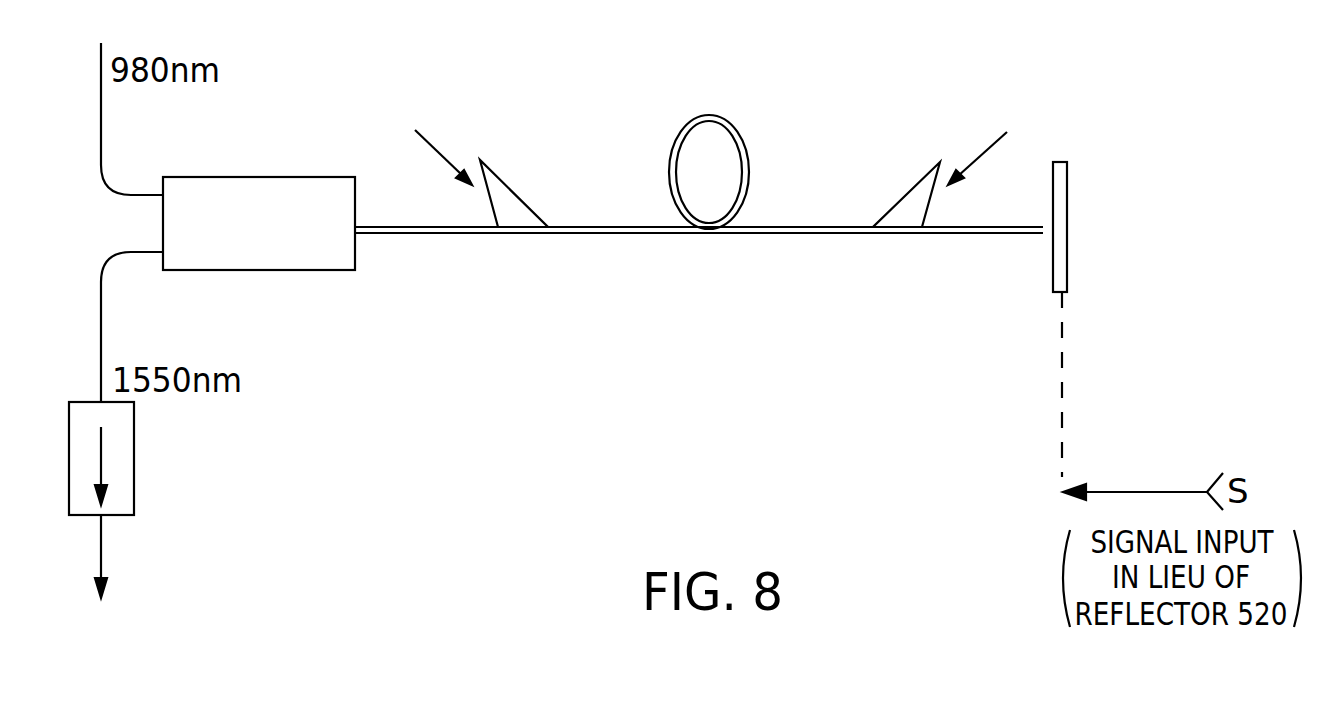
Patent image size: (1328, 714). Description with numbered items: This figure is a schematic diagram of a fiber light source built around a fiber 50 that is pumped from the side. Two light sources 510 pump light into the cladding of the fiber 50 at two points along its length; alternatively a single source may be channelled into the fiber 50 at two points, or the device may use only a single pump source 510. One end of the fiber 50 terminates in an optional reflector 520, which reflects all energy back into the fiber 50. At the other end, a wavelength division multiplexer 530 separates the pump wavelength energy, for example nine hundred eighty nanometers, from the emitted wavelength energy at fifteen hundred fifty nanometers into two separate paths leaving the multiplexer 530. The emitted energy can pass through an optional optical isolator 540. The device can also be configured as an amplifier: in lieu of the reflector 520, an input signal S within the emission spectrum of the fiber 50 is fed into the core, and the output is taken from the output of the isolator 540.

The fiber 50 is at (975, 233).
The light sources 510 is at (493, 100).
The reflector 520 is at (1067, 278).
The wavelength division multiplexer 530 is at (252, 258).
The optical isolator 540 is at (134, 453).